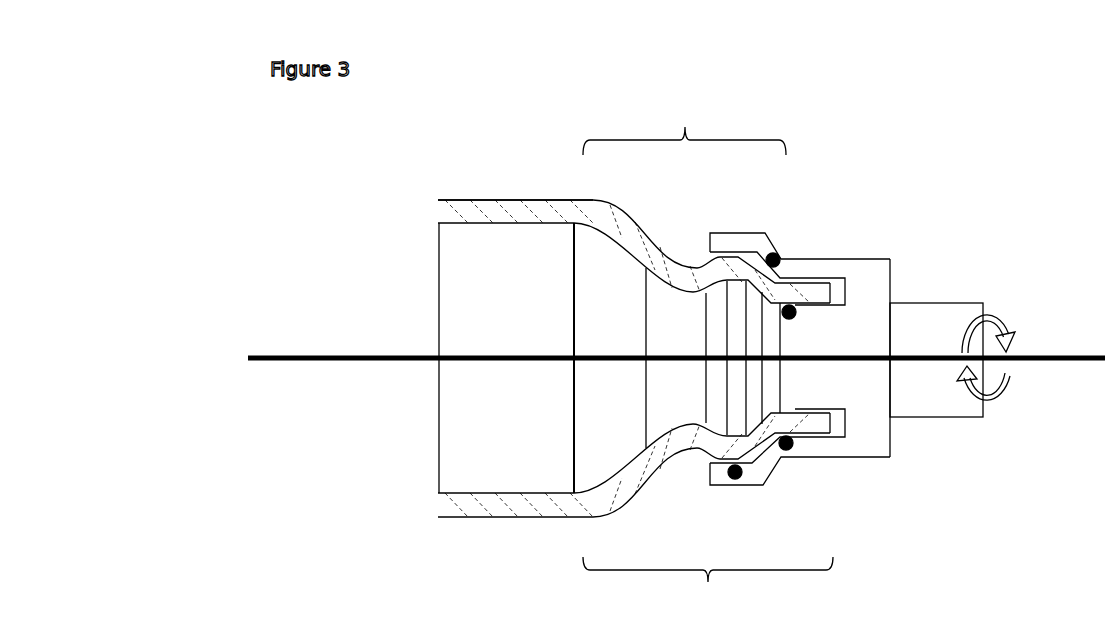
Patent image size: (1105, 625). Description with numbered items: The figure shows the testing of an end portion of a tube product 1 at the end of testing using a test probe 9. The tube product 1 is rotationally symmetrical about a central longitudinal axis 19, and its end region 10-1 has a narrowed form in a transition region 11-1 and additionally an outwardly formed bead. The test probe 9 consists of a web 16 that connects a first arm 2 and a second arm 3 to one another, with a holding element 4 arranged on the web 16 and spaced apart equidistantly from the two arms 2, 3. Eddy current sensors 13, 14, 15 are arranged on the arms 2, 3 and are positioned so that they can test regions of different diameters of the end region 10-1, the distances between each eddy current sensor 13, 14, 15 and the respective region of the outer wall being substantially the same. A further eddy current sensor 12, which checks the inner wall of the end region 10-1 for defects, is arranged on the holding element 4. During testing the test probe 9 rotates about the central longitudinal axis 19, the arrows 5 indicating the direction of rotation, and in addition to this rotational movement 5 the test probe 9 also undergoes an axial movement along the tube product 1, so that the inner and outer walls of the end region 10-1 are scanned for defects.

The tube product 1 is at (530, 124).
The first arm 2 is at (765, 245).
The second arm 3 is at (715, 477).
The holding element 4 is at (793, 343).
The arrows indicating direction of rotation 5 is at (1010, 394).
The test probe 9 is at (921, 226).
The end region 10-1 is at (708, 584).
The transition region 11-1 is at (684, 123).
The eddy current sensor 12 is at (805, 302).
The eddy current sensor 13 is at (737, 480).
The eddy current sensor 14 is at (790, 452).
The eddy current sensor 15 is at (780, 257).
The web 16 is at (877, 293).
The central longitudinal axis 19 is at (276, 366).